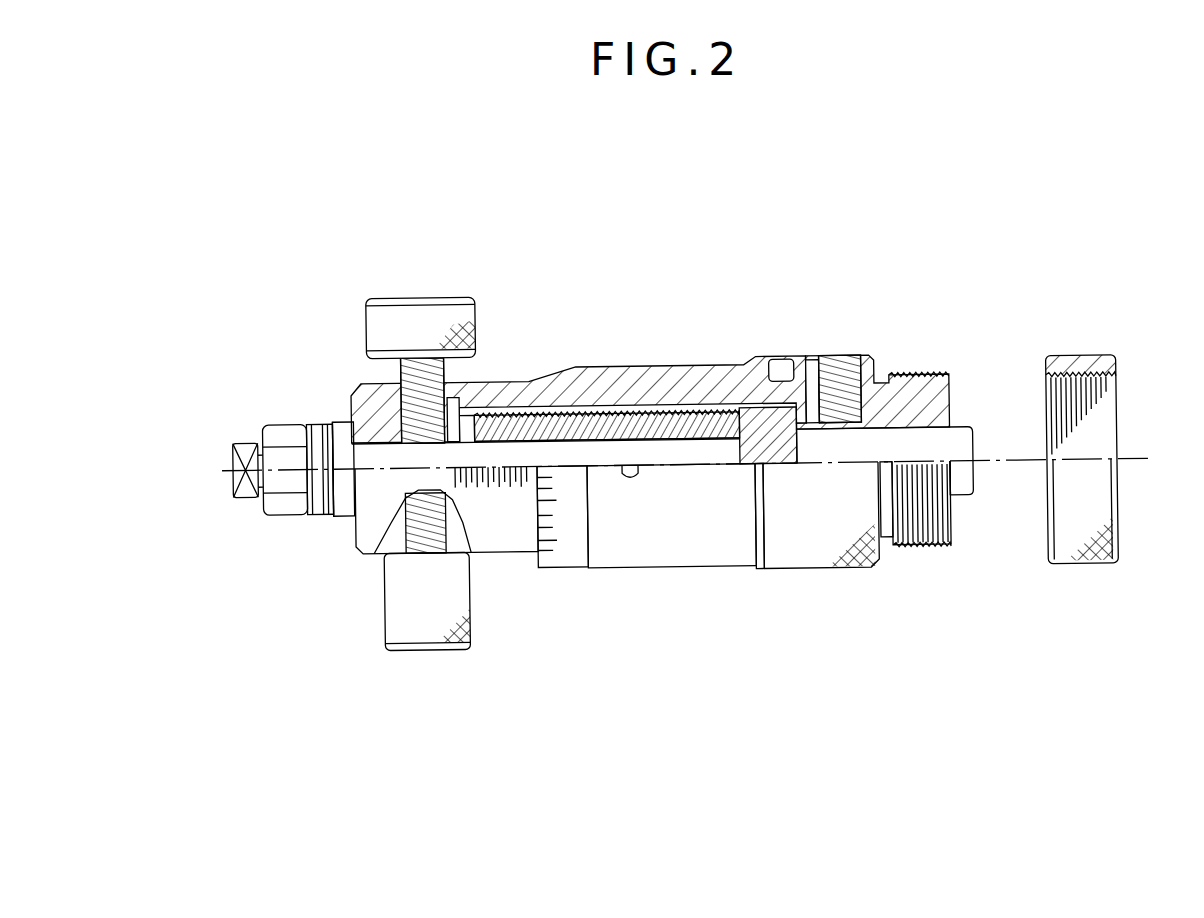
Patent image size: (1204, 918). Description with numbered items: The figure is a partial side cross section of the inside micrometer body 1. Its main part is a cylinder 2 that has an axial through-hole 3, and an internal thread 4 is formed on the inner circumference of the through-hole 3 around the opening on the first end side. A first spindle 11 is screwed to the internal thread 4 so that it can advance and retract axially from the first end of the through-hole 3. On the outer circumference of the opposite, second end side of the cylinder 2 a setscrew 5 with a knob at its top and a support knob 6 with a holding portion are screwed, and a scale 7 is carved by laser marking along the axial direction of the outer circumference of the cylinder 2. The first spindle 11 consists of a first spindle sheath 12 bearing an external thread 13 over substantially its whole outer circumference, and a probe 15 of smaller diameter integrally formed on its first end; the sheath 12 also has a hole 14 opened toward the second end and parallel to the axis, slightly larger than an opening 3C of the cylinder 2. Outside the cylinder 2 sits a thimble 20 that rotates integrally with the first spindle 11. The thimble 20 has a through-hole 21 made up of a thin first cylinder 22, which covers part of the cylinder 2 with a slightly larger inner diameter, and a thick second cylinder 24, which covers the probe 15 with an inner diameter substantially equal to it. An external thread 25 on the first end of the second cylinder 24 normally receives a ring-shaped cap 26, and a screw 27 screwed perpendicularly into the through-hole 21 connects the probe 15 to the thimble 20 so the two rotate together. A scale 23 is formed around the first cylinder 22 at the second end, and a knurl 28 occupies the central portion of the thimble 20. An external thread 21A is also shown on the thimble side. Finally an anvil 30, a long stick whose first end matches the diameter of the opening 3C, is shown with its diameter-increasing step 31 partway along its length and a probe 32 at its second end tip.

The inside micrometer body 1 is at (604, 256).
The cylinder 2 is at (521, 382).
The through-hole 3 is at (452, 418).
The internal thread 4 is at (707, 414).
The setscrew 5 is at (405, 315).
The support knob 6 is at (410, 627).
The scale 7 is at (509, 488).
The first spindle 11 is at (788, 660).
The first spindle sheath 12 is at (741, 441).
The external thread 13 is at (717, 437).
The hole 14 is at (673, 433).
The probe 15 is at (813, 455).
The thimble 20 is at (796, 278).
The through-hole 21 is at (772, 384).
The external thread of cap 21A is at (932, 410).
The first cylinder 22 is at (797, 387).
The scale 23 is at (544, 499).
The second cylinder 24 is at (886, 382).
The external thread 25 is at (927, 378).
The ring-shaped cap 26 is at (1092, 361).
The screw 27 is at (842, 405).
The knurl 28 is at (848, 572).
The anvil 30 is at (338, 512).
The opening 3C is at (340, 423).
The step 31 is at (316, 501).
The probe 32 is at (250, 462).